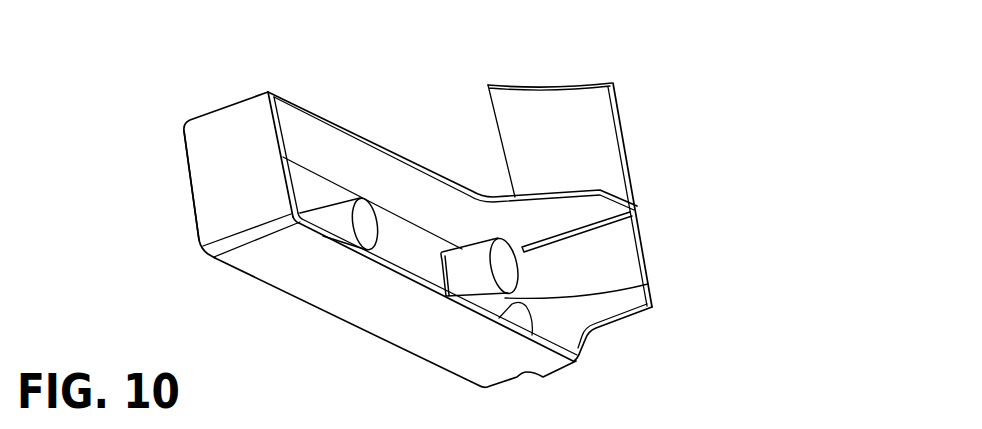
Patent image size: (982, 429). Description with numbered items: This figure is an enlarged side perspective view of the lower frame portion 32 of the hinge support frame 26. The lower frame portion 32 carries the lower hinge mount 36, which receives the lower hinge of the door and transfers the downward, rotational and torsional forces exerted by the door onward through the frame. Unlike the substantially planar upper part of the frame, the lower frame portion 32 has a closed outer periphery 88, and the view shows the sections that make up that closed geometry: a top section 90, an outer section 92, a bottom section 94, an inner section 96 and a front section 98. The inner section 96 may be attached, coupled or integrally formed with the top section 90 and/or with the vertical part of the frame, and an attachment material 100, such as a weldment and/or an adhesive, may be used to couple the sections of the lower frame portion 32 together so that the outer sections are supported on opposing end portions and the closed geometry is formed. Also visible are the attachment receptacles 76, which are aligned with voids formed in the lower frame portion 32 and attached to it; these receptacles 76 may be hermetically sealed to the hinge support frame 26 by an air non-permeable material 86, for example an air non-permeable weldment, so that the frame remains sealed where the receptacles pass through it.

The hinge support frame 26 is at (585, 142).
The lower frame portion 32 is at (348, 297).
The lower hinge mount 36 is at (382, 213).
The attachment receptacles 76 is at (348, 232).
The air non-permeable material 86 is at (297, 222).
The closed outer periphery 88 is at (212, 161).
The top section 90 is at (335, 150).
The outer section 92 is at (230, 190).
The bottom section 94 is at (407, 315).
The inner section 96 is at (588, 312).
The front section 98 is at (403, 240).
The attachment material 100 is at (573, 232).